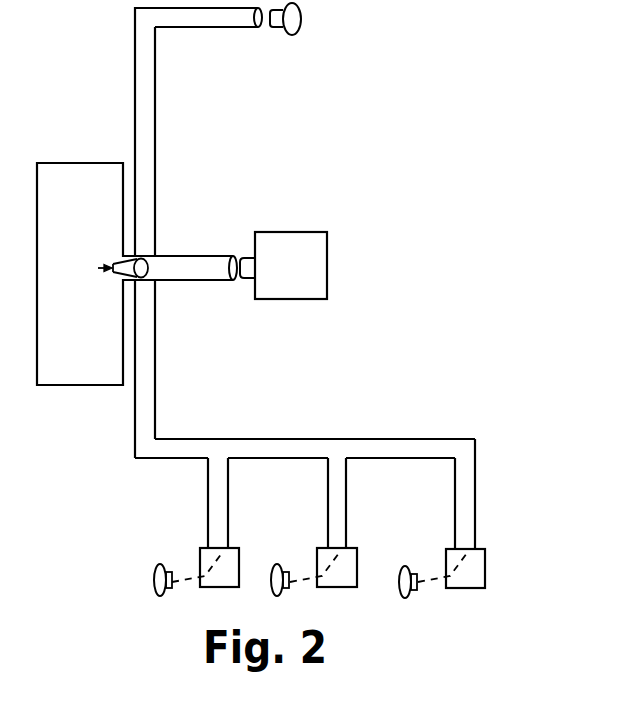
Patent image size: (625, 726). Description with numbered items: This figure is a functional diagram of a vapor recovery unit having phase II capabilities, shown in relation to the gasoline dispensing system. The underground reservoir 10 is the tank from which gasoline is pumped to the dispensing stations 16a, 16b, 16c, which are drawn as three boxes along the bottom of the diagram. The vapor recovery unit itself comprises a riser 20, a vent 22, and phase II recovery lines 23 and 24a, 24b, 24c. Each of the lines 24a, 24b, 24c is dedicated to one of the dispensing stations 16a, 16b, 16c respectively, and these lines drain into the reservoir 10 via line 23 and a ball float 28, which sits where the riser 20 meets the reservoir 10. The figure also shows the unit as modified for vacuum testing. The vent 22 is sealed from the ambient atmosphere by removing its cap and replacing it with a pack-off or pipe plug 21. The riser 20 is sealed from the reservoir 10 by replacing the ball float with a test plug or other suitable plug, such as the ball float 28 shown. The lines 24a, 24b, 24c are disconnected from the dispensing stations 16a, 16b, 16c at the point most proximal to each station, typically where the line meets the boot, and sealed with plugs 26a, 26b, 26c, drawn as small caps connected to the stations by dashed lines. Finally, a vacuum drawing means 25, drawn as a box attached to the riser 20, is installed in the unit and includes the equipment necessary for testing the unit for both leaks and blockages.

The underground reservoir 10 is at (80, 274).
The riser 20 is at (198, 255).
The pipe plug 21 is at (299, 20).
The vent 22 is at (178, 23).
The phase II recovery line 23 is at (293, 438).
The phase II recovery line 24a is at (222, 497).
The phase II recovery line 24b is at (340, 497).
The phase II recovery line 24c is at (469, 497).
The vacuum drawing means 25 is at (291, 265).
The plug 26a is at (157, 574).
The plug 26b is at (274, 574).
The plug 26c is at (402, 576).
The dispensing station 16a is at (219, 587).
The dispensing station 16b is at (337, 587).
The dispensing station 16c is at (462, 588).
The ball float 28 is at (108, 272).